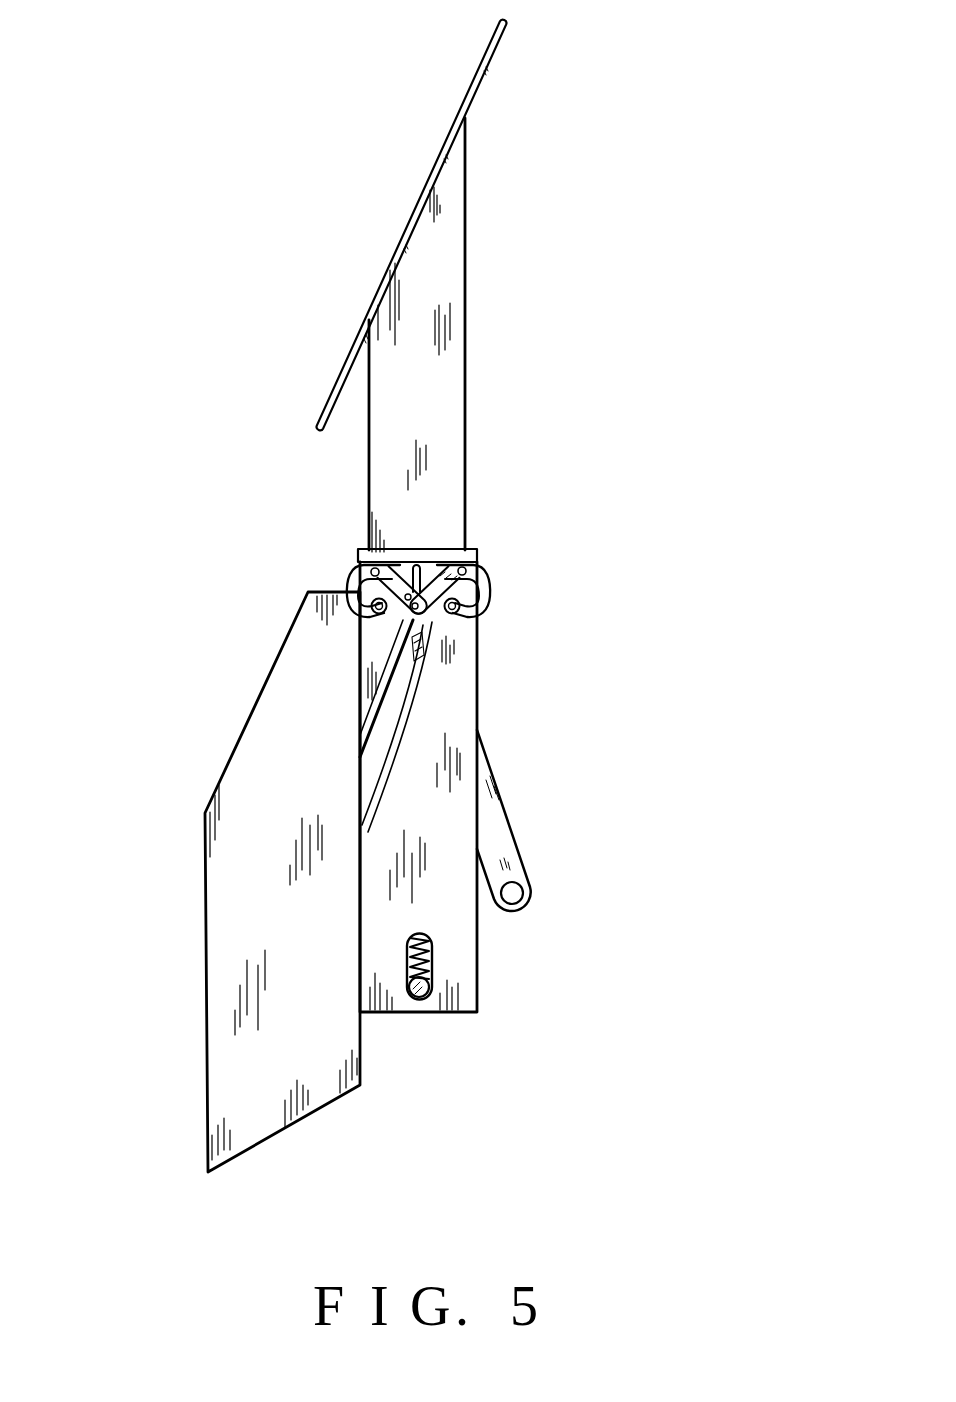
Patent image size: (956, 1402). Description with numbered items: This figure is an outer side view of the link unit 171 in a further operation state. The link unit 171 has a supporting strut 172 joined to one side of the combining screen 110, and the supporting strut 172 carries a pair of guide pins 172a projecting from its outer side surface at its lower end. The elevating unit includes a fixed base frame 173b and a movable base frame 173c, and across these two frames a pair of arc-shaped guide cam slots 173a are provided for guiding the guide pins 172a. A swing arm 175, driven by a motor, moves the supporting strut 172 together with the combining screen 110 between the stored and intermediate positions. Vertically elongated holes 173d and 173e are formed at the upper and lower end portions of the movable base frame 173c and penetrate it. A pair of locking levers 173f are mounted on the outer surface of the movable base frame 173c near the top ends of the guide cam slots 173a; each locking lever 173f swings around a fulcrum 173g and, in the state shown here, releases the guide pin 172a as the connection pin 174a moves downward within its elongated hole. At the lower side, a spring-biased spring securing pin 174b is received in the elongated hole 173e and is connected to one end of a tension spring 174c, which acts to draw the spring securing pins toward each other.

The combining screen 110 is at (488, 70).
The supporting strut 172 is at (453, 192).
The guide pins 172a is at (412, 562).
The vertically elongated hole 173d is at (425, 565).
The fulcrum 173g is at (358, 568).
The locking levers 173f is at (348, 575).
The guide cam slots 173a is at (364, 636).
The connection pin 174a is at (400, 622).
The movable base frame 173c is at (465, 668).
The swing arm 175 is at (503, 837).
The fixed base frame 173b is at (242, 878).
The tension spring 174c is at (430, 950).
The elongated hole 173e is at (430, 965).
The spring securing pin 174b is at (423, 1000).
The link unit 171 is at (413, 1047).